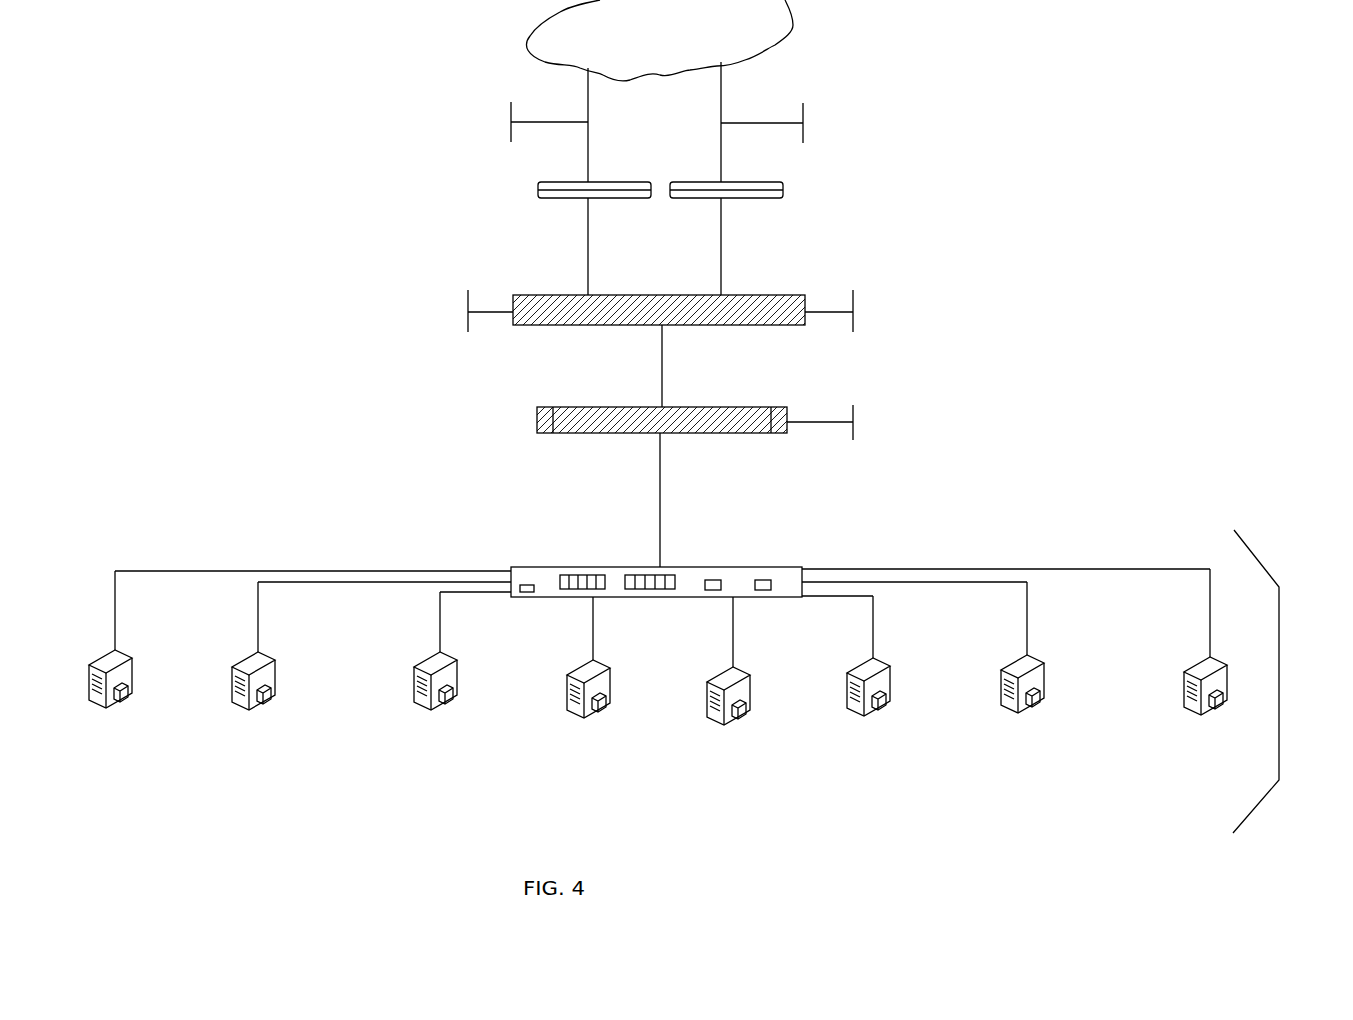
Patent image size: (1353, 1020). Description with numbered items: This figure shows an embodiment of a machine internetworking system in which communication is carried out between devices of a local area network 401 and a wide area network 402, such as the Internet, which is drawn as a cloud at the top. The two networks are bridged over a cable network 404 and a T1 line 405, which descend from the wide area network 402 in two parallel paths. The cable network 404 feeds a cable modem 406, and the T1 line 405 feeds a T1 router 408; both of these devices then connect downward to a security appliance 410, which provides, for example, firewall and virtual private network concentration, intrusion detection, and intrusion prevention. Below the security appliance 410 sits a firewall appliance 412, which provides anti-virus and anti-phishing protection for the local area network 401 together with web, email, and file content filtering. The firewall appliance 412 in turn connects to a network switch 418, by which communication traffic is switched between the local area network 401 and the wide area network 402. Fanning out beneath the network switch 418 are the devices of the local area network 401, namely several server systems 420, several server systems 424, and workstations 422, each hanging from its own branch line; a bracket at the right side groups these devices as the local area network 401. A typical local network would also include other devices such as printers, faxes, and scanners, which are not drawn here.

The local area network 401 is at (1285, 681).
The wide area network 402 is at (659, 40).
The cable network 404 is at (445, 125).
The T1 line 405 is at (830, 122).
The cable modem 406 is at (482, 237).
The T1 router 408 is at (822, 238).
The security appliance 410 is at (631, 348).
The firewall appliance 412 is at (666, 486).
The network switch 418 is at (662, 547).
The server systems 420 is at (667, 677).
The workstations 422 is at (656, 681).
The server systems 424 is at (580, 691).